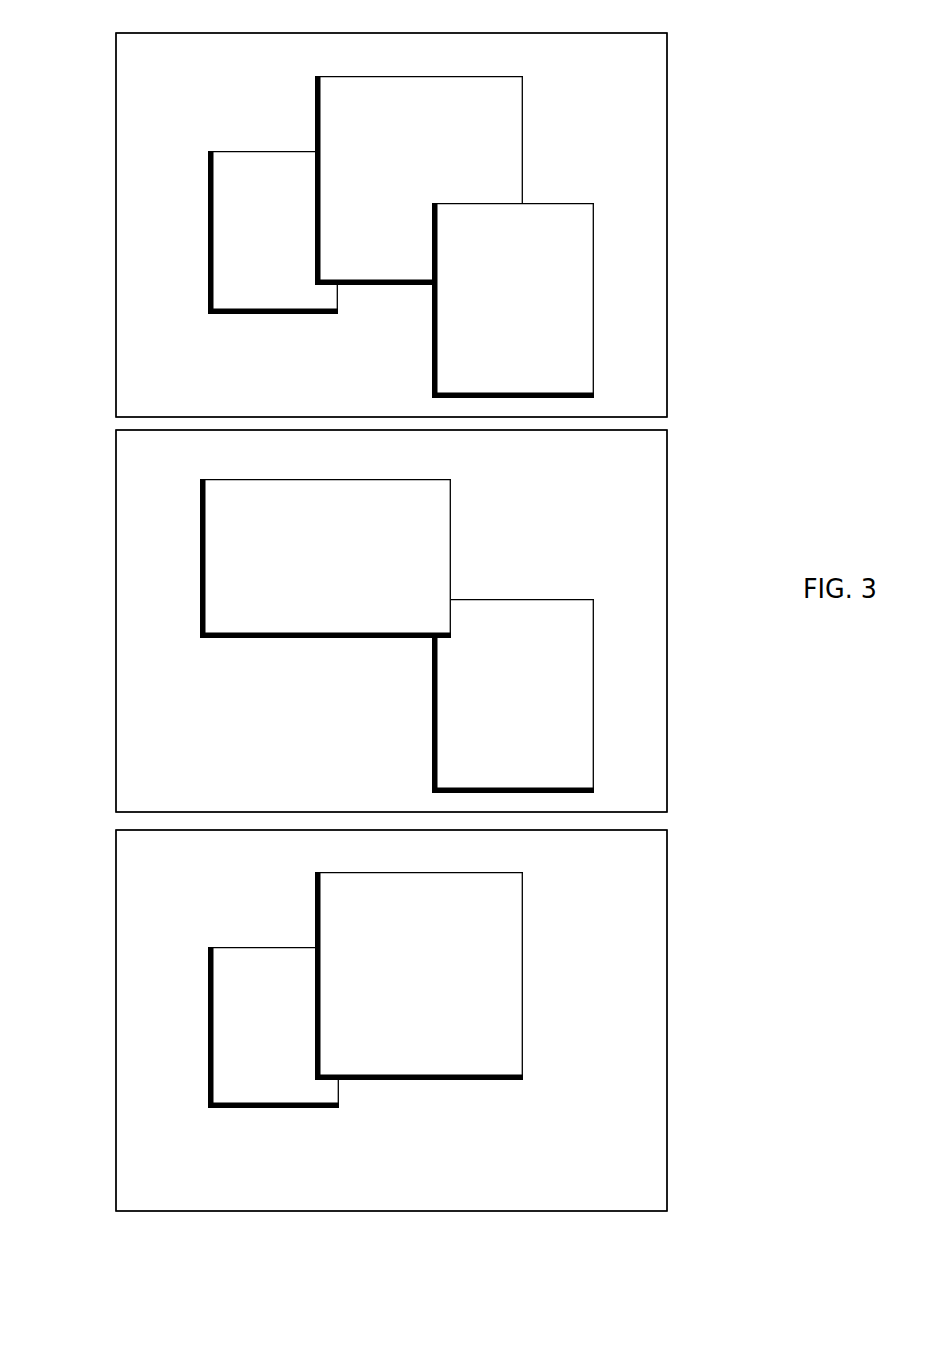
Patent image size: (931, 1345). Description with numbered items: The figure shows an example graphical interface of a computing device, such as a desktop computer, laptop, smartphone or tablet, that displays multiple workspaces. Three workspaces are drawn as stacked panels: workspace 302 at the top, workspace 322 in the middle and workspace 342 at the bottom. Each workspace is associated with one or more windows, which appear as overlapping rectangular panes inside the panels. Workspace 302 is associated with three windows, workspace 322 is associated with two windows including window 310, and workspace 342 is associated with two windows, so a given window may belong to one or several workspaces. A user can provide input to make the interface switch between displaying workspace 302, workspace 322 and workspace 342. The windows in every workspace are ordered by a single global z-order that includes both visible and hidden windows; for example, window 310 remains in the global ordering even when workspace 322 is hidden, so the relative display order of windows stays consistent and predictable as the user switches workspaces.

The workspace 302 is at (153, 72).
The window 310 is at (312, 564).
The workspace 322 is at (153, 464).
The workspace 342 is at (153, 862).